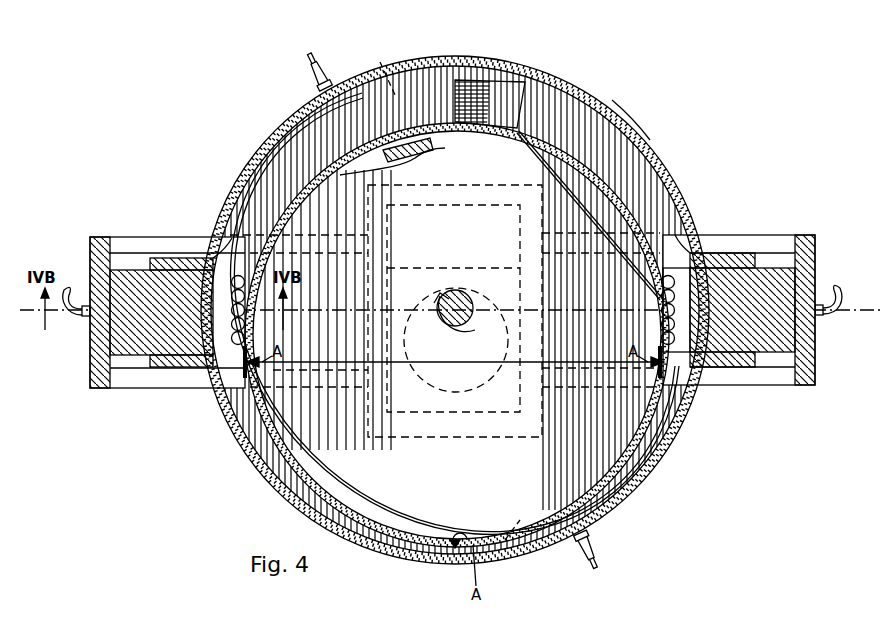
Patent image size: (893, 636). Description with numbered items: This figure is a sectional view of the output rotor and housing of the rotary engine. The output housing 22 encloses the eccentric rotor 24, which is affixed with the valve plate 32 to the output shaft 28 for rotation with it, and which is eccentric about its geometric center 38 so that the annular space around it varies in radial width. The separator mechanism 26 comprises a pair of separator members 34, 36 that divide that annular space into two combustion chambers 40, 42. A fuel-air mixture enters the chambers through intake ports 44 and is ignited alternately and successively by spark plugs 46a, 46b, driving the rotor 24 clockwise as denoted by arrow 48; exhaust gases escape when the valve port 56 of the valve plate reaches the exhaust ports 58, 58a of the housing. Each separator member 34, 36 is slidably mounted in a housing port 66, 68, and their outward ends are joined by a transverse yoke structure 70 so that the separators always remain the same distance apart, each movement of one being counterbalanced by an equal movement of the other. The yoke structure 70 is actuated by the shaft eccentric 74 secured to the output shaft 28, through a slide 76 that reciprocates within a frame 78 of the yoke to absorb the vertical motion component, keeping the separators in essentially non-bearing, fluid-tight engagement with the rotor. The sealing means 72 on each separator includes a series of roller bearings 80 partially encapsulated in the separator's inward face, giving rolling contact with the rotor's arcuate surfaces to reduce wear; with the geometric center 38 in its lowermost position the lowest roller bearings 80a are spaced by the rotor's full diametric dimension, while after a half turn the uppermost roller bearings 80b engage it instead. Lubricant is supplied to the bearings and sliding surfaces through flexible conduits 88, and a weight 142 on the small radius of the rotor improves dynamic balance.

The output housing 22 is at (663, 87).
The eccentric rotor 24 is at (597, 187).
The separator mechanism 26 is at (808, 236).
The output shaft 28 is at (447, 292).
The valve plate 32 is at (632, 127).
The separator member 34 is at (137, 345).
The separator member 36 is at (777, 340).
The geometric center 38 is at (452, 343).
The combustion chamber 40 is at (573, 127).
The combustion chamber 42 is at (672, 440).
The intake port 44 is at (540, 100).
The spark plug 46a is at (316, 60).
The spark plug 46b is at (594, 546).
The arrow 48 is at (446, 333).
The valve port 56 is at (478, 80).
The exhaust port 58 is at (382, 58).
The exhaust port 58a is at (518, 553).
The housing port 66 is at (177, 262).
The housing port 68 is at (733, 258).
The yoke structure 70 is at (727, 242).
The sealing means 72 is at (227, 207).
The shaft eccentric 74 is at (508, 330).
The slide 76 is at (487, 267).
The frame 78 is at (413, 185).
The roller bearings 80 is at (246, 312).
The lowest roller bearing 80a is at (222, 370).
The uppermost roller bearing 80b is at (244, 275).
The flexible conduit 88 is at (73, 318).
The weight 142 is at (329, 310).